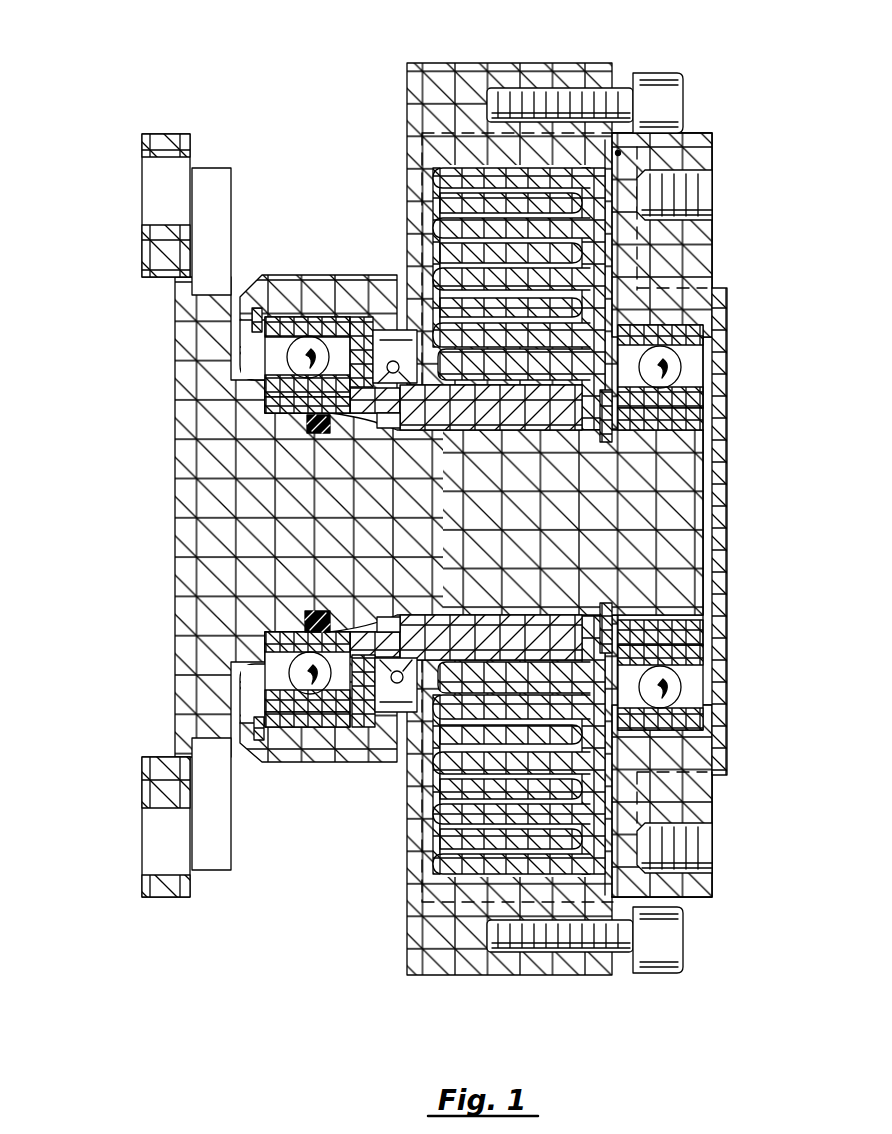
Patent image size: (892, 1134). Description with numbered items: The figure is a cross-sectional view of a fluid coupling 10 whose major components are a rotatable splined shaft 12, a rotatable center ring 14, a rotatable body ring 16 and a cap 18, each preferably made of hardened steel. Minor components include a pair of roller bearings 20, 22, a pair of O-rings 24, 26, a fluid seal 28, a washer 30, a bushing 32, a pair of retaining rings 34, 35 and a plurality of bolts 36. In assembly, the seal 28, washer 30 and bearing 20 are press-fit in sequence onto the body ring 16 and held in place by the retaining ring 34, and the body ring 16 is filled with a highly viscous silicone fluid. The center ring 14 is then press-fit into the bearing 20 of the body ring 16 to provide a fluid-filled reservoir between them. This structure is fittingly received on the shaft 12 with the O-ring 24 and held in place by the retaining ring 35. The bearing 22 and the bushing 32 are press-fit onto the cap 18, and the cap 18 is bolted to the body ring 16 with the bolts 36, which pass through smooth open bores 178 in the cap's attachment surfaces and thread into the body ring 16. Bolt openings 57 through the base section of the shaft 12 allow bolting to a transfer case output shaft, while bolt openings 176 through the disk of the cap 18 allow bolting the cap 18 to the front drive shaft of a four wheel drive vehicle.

The fluid coupling 10 is at (288, 112).
The splined shaft 12 is at (205, 475).
The center ring 14 is at (596, 232).
The body ring 16 is at (416, 275).
The cap 18 is at (727, 310).
The roller bearing 20 is at (290, 320).
The roller bearing 22 is at (695, 393).
The O-ring 24 is at (295, 420).
The O-ring 26 is at (622, 153).
The fluid seal 28 is at (388, 345).
The washer 30 is at (300, 398).
The bushing 32 is at (692, 424).
The retaining ring 34 is at (252, 323).
The retaining ring 35 is at (617, 443).
The bolts 36 is at (683, 100).
The bolt openings 57 is at (155, 195).
The bolt openings 176 is at (556, 98).
The open bores 178 is at (700, 200).